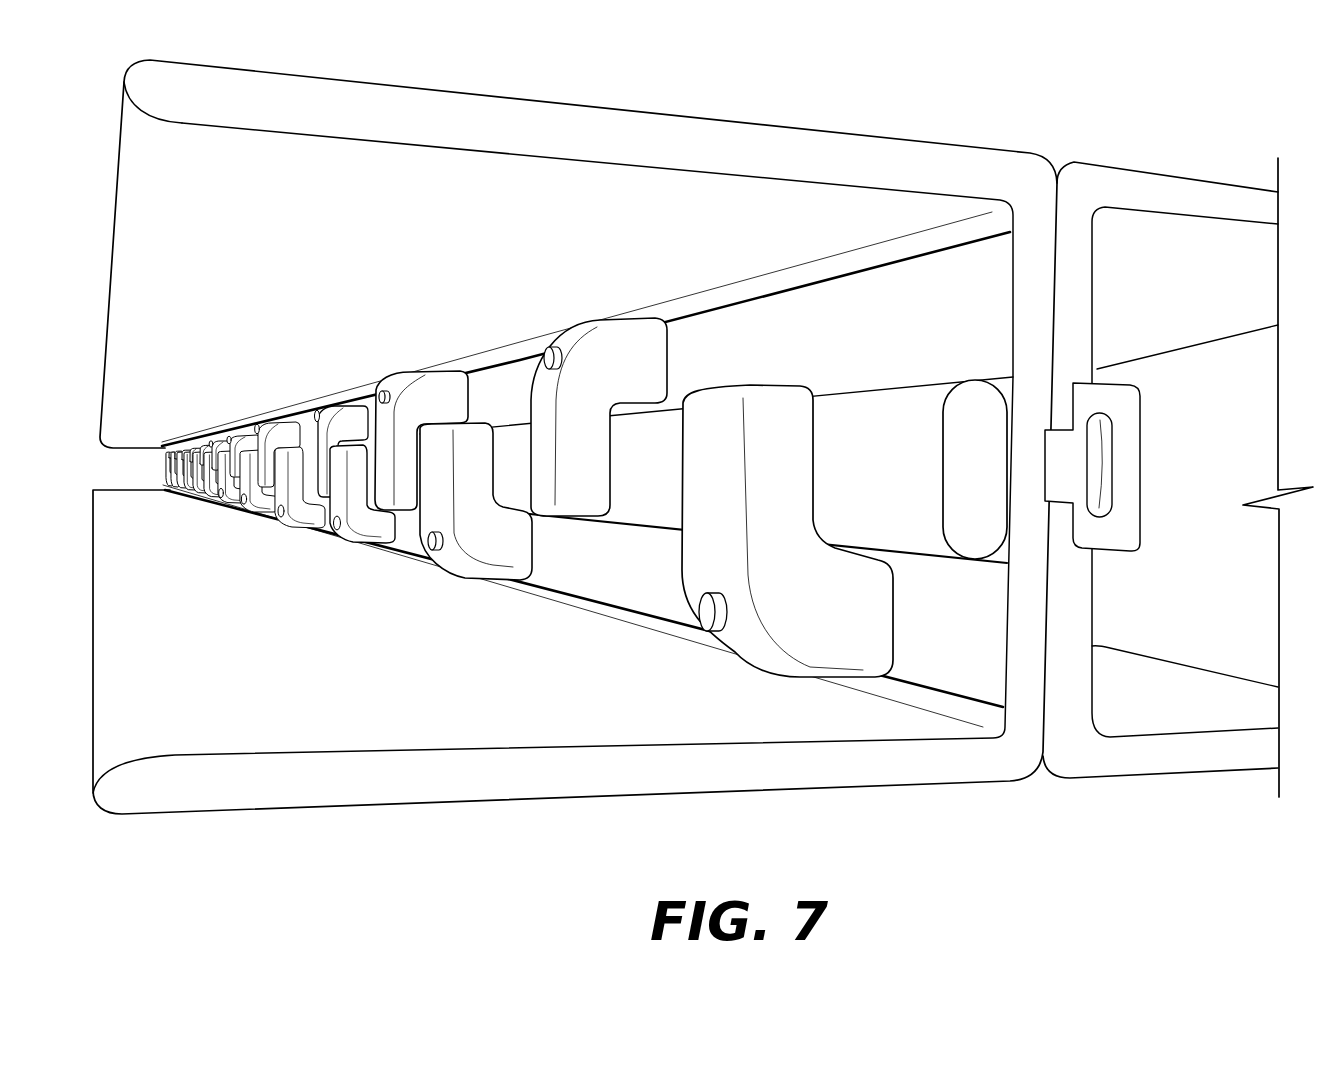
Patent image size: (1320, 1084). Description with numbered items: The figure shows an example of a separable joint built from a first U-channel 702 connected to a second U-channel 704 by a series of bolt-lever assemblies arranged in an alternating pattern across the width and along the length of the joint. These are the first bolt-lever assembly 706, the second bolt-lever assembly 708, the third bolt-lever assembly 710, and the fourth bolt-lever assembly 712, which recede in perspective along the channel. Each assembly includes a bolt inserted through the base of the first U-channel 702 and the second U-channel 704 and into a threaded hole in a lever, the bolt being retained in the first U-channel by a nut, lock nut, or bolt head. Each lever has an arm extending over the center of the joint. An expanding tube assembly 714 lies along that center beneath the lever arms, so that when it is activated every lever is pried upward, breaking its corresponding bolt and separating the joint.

The first U-channel 702 is at (1190, 177).
The second U-channel 704 is at (775, 124).
The first bolt-lever assembly 706 is at (750, 660).
The second bolt-lever assembly 708 is at (598, 318).
The third bolt-lever assembly 710 is at (449, 572).
The fourth bolt-lever assembly 712 is at (420, 373).
The expanding tube assembly 714 is at (893, 481).